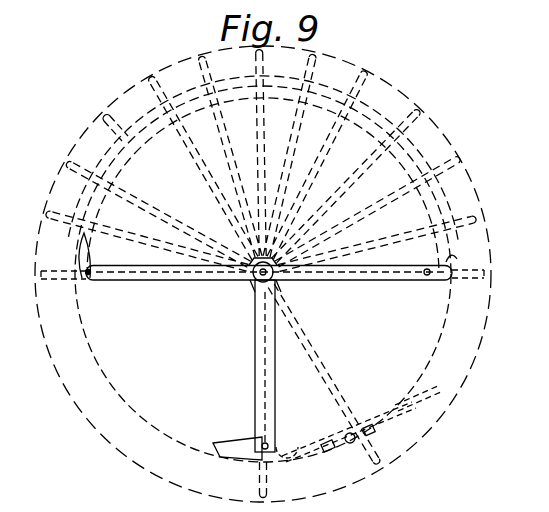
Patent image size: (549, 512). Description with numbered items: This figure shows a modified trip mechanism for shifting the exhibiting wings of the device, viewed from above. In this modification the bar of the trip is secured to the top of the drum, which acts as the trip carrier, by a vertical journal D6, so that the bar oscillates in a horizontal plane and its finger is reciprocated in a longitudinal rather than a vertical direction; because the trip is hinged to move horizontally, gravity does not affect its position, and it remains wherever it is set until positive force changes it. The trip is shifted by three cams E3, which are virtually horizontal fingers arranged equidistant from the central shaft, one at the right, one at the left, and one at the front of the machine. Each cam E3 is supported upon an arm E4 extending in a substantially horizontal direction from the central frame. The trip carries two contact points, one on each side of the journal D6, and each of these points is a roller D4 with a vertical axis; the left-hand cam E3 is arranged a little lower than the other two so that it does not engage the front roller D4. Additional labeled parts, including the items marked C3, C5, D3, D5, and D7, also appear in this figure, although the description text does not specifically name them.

The radial arm slot C3 is at (330, 376).
The adjustment slot C5 is at (447, 123).
The cam E3 is at (88, 256).
The arm E4 is at (380, 292).
The link block D3 is at (323, 452).
The roller D4 is at (325, 445).
The link rod end D5 is at (419, 394).
The vertical journal D6 is at (349, 444).
The slide block D7 is at (375, 432).